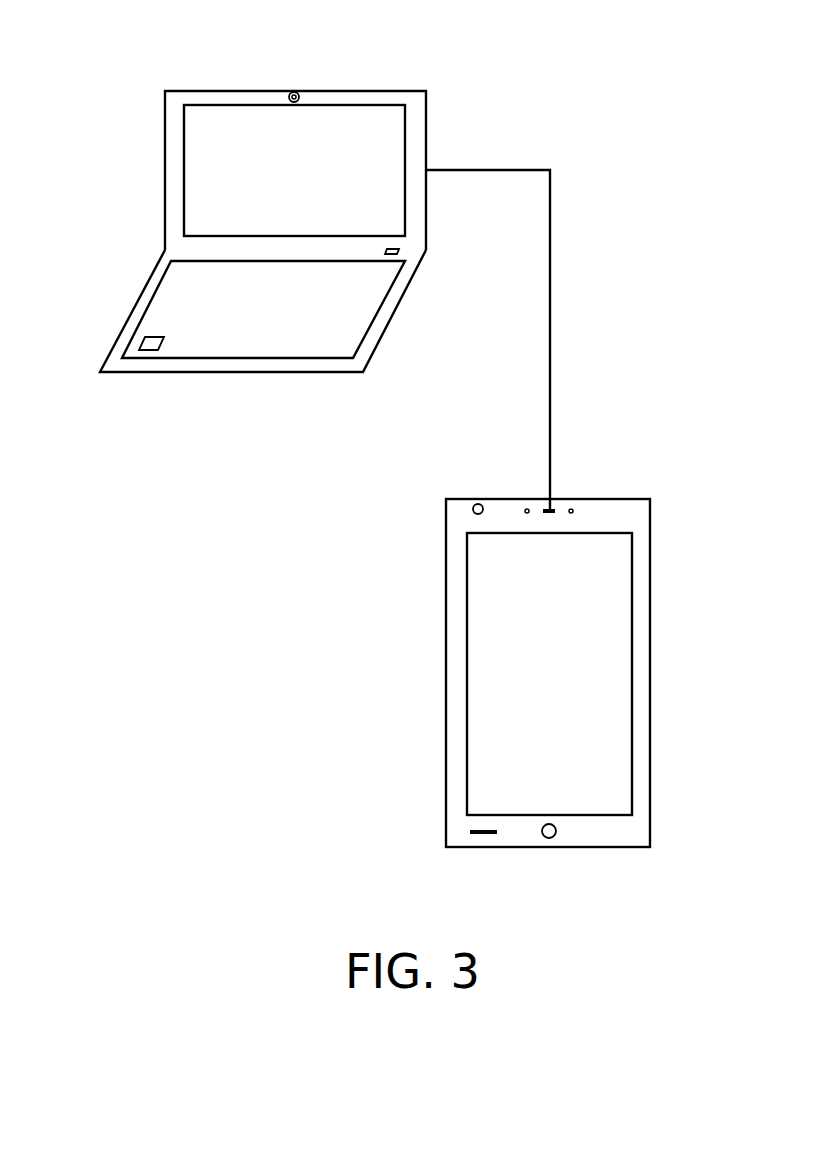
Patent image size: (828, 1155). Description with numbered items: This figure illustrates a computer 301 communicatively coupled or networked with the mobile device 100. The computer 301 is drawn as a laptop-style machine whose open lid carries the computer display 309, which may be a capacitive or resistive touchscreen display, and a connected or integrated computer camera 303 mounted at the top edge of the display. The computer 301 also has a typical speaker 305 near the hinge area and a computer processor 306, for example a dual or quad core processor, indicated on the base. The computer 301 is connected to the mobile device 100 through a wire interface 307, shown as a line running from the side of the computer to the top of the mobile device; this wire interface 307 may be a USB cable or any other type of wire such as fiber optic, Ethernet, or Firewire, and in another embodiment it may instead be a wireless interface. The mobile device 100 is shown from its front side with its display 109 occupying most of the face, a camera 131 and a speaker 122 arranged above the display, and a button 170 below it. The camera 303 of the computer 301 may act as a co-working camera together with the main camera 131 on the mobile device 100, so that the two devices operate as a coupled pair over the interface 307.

The computer 301 is at (142, 42).
The computer camera 303 is at (294, 91).
The speaker 305 is at (399, 251).
The computer processor 306 is at (143, 340).
The wire interface 307 is at (487, 169).
The computer display 309 is at (202, 152).
The mobile device 100 is at (569, 900).
The display 109 is at (483, 658).
The speaker 122 is at (553, 508).
The camera 131 is at (478, 503).
The user input unit 170 is at (556, 831).